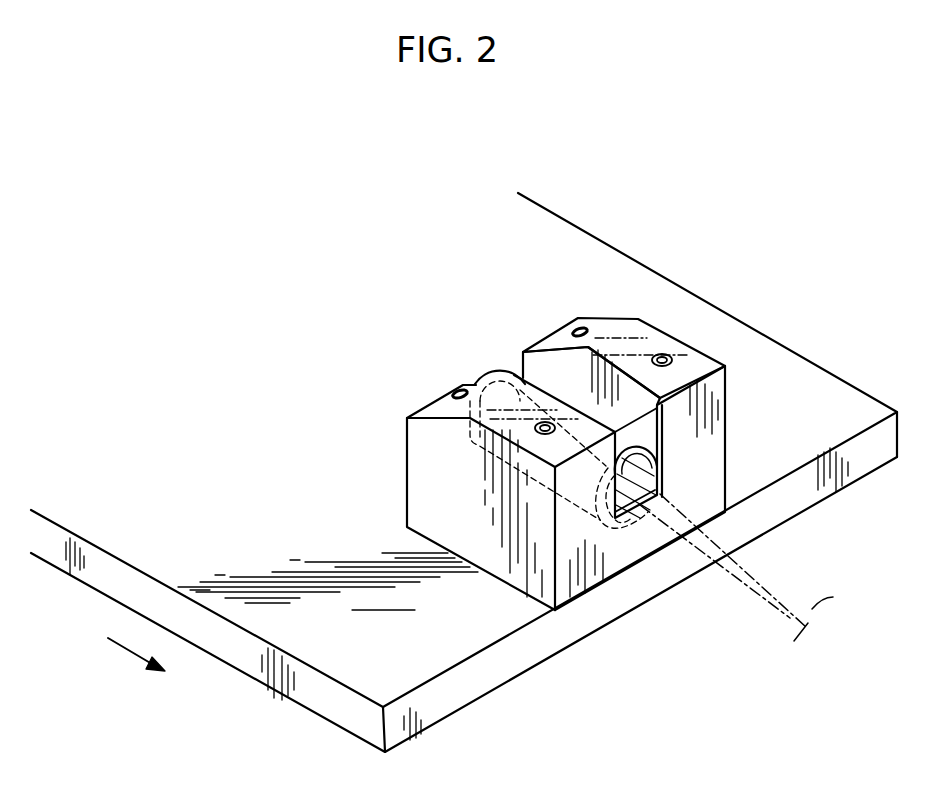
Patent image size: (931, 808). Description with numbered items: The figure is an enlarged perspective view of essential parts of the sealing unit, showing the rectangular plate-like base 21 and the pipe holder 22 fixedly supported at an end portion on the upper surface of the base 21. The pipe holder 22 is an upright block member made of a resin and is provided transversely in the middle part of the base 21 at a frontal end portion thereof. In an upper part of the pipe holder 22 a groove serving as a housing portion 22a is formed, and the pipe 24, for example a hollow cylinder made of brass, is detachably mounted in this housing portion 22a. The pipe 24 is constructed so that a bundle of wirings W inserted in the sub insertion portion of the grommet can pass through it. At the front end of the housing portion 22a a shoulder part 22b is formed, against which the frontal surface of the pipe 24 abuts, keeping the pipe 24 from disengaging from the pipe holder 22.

The base 21 is at (770, 380).
The pipe holder 22 is at (640, 335).
The groove (housing portion) 22a is at (575, 380).
The shoulder part 22b is at (638, 420).
The pipe 24 is at (485, 374).
The bundle of wirings W is at (770, 570).